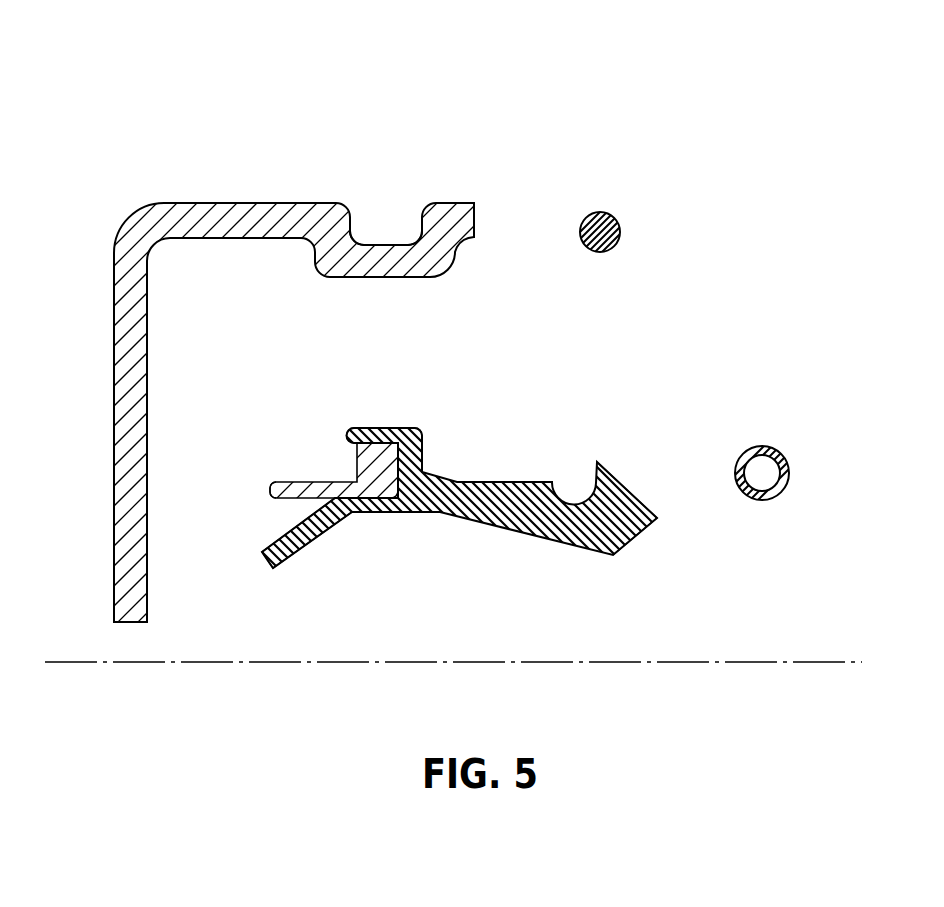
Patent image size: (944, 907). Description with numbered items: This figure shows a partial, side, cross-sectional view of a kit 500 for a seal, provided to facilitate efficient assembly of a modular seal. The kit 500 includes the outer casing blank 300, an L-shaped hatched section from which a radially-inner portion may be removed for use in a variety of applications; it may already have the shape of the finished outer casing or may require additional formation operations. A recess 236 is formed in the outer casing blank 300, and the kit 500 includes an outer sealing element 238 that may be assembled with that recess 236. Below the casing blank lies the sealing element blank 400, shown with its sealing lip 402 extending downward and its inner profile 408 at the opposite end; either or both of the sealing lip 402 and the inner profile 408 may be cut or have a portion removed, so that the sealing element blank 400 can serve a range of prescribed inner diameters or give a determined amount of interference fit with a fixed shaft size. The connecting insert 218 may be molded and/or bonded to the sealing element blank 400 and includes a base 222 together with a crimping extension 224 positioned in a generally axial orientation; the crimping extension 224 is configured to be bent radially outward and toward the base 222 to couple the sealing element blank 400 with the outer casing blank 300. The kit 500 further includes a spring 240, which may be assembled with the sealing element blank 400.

The kit 500 is at (283, 87).
The outer casing blank 300 is at (210, 202).
The recess 236 is at (373, 222).
The outer sealing element 238 is at (602, 212).
The spring 240 is at (762, 446).
The connecting insert 218 is at (316, 488).
The base 222 is at (384, 462).
The crimping extension 224 is at (284, 499).
The sealing element blank 400 is at (489, 482).
The sealing lip 402 is at (313, 540).
The inner profile 408 is at (613, 556).